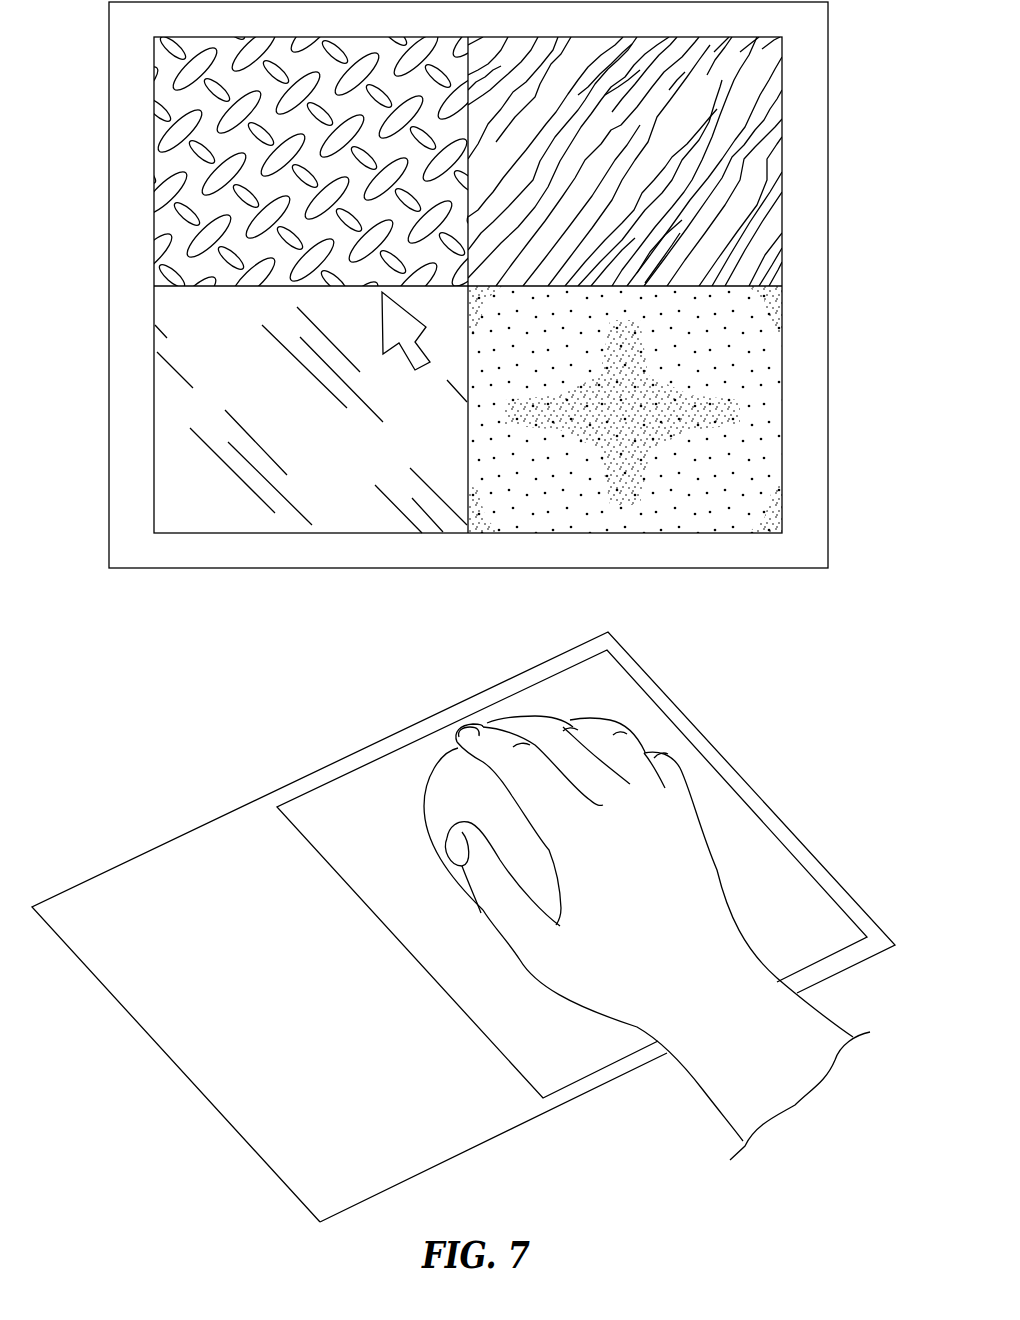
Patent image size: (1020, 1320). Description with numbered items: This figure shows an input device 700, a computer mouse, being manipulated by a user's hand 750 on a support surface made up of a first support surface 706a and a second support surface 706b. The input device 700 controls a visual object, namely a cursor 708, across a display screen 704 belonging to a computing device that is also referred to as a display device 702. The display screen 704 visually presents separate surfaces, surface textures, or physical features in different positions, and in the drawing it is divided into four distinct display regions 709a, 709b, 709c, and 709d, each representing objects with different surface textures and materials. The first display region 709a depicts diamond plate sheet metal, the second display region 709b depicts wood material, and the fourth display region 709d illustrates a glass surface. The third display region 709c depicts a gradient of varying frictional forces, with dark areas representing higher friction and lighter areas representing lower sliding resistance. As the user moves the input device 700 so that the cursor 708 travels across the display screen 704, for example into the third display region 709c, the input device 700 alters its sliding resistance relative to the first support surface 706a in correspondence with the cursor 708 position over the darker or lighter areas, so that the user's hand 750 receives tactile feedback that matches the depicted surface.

The input device 700 is at (433, 817).
The display device 702 is at (828, 425).
The display screen 704 is at (782, 161).
The first support surface 706a is at (573, 1062).
The second support surface 706b is at (443, 1122).
The cursor 708 is at (417, 366).
The first display region 709a is at (179, 111).
The second display region 709b is at (747, 202).
The third display region 709c is at (755, 457).
The fourth display region 709d is at (232, 500).
The user's hand 750 is at (690, 810).